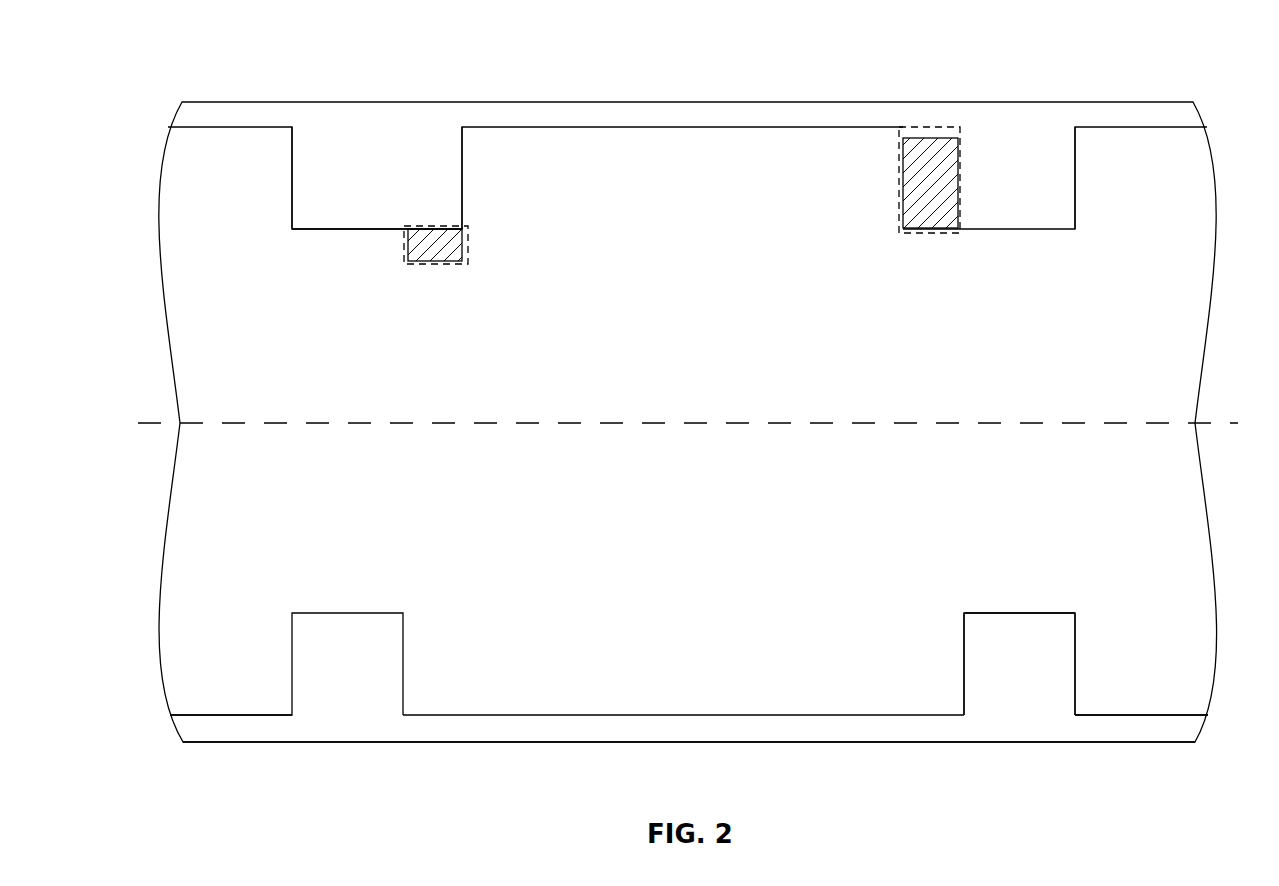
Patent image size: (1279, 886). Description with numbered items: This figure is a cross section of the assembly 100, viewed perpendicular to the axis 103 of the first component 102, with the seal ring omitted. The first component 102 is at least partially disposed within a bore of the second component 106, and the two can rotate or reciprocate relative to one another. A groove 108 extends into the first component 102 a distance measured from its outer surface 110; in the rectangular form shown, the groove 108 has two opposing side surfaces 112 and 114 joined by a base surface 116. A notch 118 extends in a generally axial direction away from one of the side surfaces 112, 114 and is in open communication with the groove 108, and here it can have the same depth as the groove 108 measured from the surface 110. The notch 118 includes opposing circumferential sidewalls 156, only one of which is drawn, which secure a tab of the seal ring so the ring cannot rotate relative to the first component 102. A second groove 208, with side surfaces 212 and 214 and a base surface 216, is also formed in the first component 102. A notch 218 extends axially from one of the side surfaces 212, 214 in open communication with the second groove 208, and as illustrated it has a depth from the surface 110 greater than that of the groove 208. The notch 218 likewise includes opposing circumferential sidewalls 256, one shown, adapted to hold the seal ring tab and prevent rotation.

The assembly 100 is at (1149, 61).
The first component 102 is at (739, 700).
The axis 103 is at (1223, 423).
The second component 106 is at (523, 744).
The groove 108 is at (1011, 149).
The outer surface 110 is at (1122, 718).
The side surface 112 is at (962, 666).
The side surface 114 is at (1078, 184).
The base surface 116 is at (1025, 611).
The notch 118 is at (936, 127).
The circumferential sidewall 156 is at (928, 228).
The second groove 208 is at (379, 149).
The side surface 212 is at (290, 184).
The side surface 214 is at (464, 184).
The base surface 216 is at (355, 231).
The notch 218 is at (433, 262).
The circumferential sidewall 256 is at (469, 243).